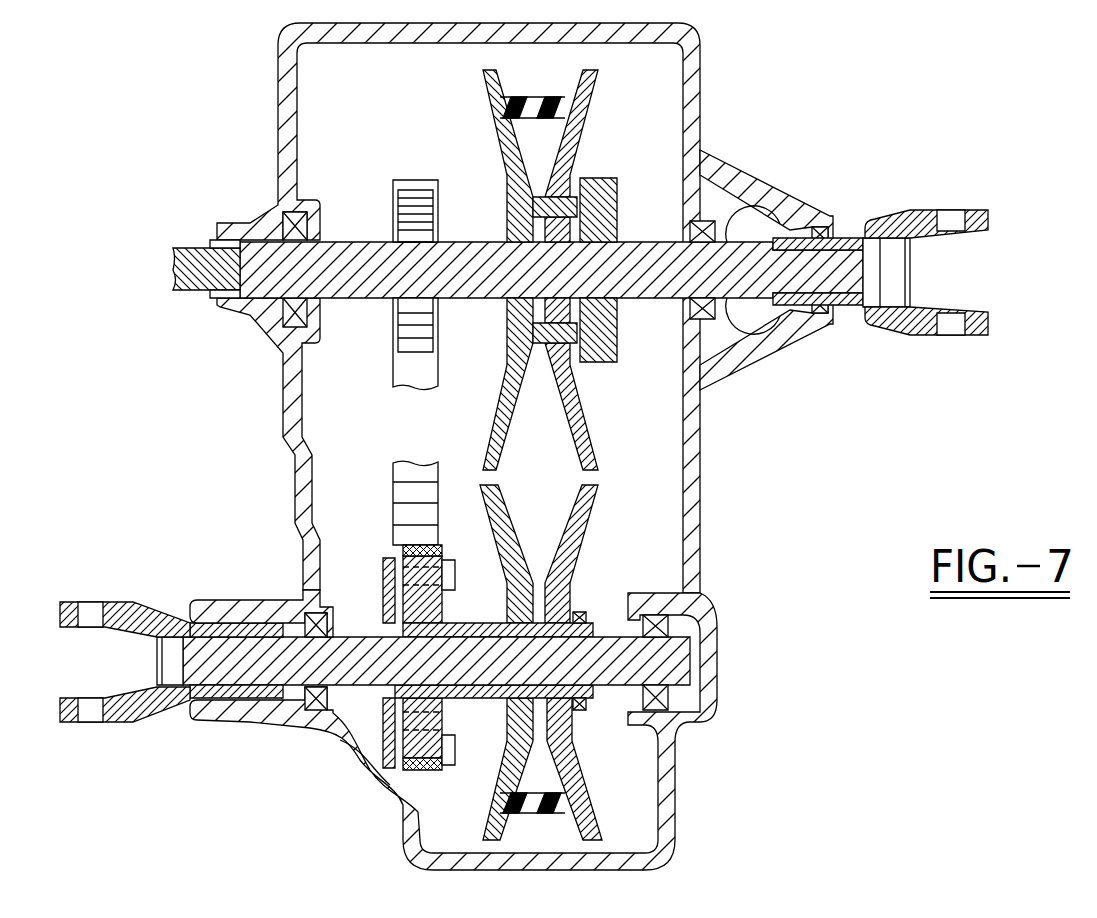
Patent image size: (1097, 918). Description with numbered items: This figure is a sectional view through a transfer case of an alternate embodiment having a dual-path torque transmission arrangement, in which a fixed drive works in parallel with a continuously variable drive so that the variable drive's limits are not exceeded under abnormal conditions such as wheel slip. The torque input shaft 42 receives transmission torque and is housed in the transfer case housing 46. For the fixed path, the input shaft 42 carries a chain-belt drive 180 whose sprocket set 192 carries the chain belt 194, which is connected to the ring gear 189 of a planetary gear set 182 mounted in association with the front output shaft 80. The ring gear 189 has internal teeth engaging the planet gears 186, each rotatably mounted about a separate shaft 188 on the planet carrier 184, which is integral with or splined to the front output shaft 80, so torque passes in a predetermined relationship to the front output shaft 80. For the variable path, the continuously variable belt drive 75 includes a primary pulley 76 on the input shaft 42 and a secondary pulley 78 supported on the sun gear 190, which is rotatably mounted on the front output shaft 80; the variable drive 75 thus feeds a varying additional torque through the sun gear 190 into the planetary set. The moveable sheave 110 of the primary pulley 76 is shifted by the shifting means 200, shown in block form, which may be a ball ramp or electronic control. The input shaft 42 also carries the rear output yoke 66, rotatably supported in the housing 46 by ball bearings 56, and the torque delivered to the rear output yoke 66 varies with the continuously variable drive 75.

The torque input shaft 42 is at (462, 288).
The transfer case housing 46 is at (745, 195).
The ball bearing assembly 56 is at (690, 308).
The rear output yoke 66 is at (913, 335).
The continuously variable belt drive 75 is at (486, 128).
The primary pulley 76 is at (585, 134).
The secondary pulley 78 is at (583, 556).
The front output shaft 80 is at (370, 678).
The moveable sheave 110 is at (508, 168).
The chain-belt drive 180 is at (387, 482).
The planetary gear set 182 is at (380, 565).
The planet carrier 184 is at (382, 740).
The planet gears 186 is at (412, 825).
The shaft 188 is at (430, 582).
The ring gear 189 is at (400, 785).
The sun gear 190 is at (487, 700).
The sprocket set 192 is at (398, 215).
The chain belt 194 is at (393, 378).
The means to shift moveable sheave 200 is at (603, 180).